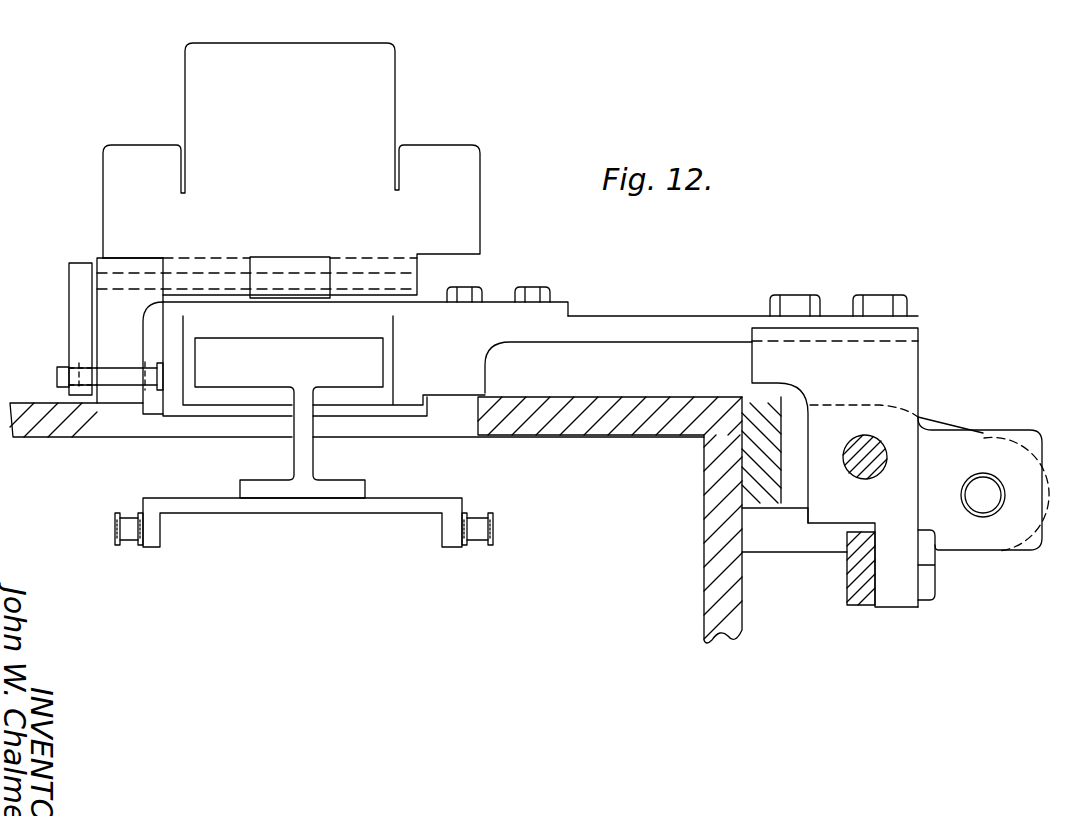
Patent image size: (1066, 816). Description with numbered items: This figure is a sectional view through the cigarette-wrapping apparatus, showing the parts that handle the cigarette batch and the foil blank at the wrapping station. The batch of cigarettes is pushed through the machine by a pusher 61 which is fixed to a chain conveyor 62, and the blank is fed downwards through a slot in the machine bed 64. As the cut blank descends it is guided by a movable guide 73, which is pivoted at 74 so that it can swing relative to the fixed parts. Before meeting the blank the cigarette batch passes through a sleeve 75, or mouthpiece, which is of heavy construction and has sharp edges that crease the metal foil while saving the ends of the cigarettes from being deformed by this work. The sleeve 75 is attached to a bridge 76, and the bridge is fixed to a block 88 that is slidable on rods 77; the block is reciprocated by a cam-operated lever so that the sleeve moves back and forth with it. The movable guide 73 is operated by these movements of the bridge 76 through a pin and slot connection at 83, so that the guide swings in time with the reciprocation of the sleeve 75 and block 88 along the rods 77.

The pusher 61 is at (368, 365).
The chain conveyor 62 is at (473, 548).
The machine bed 64 is at (605, 420).
The movable guide 73 is at (379, 91).
The pivot 74 is at (121, 280).
The sleeve 75 is at (343, 310).
The bridge 76 is at (715, 320).
The rods 77 is at (877, 462).
The pin and slot connection 83 is at (79, 385).
The block 88 is at (908, 368).